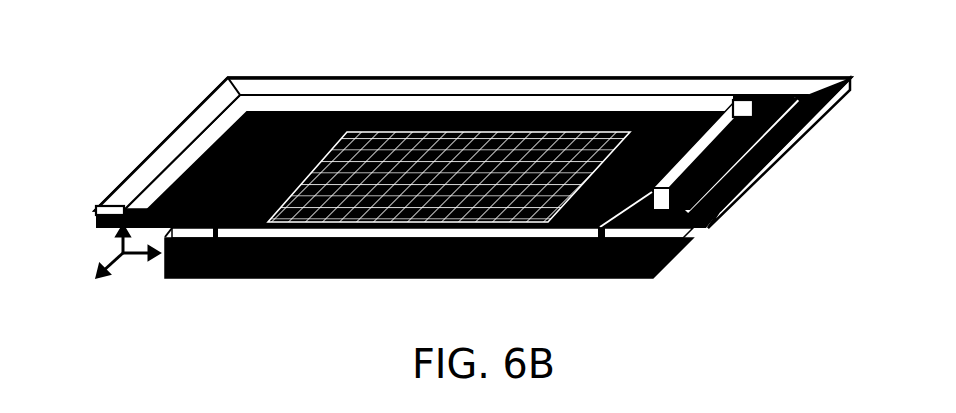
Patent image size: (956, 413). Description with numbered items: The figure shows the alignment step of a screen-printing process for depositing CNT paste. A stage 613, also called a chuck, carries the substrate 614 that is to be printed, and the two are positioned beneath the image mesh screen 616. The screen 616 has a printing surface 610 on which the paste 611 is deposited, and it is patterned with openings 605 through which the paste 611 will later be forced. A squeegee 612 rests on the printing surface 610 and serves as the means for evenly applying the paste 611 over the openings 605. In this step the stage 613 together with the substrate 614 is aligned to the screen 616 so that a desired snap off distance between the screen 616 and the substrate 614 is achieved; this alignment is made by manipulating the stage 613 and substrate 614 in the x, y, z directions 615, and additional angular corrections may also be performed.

The openings 605 is at (363, 137).
The printing surface 610 is at (262, 175).
The paste 611 is at (648, 197).
The squeegee 612 is at (737, 108).
The stage 613 is at (683, 244).
The substrate 614 is at (230, 226).
The x,y,z directions 615 is at (112, 258).
The image mesh screen 616 is at (133, 197).